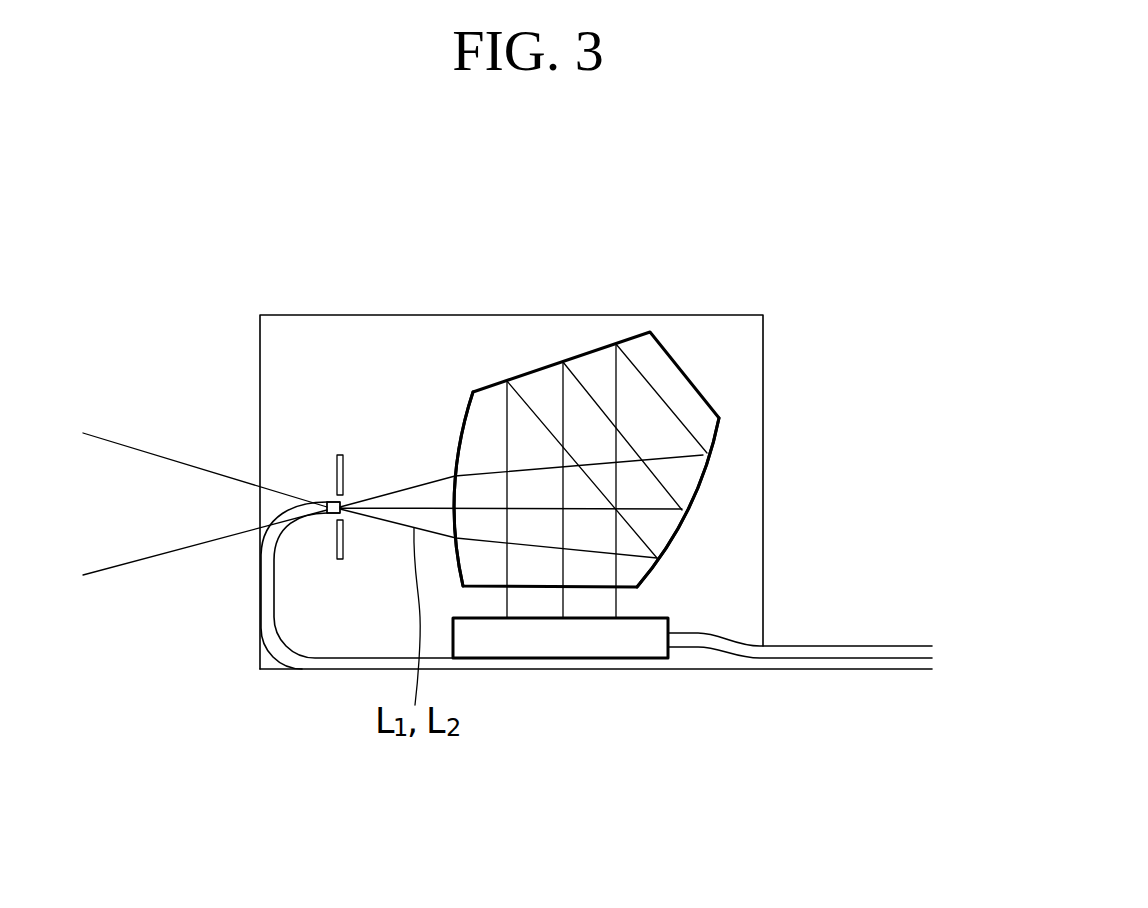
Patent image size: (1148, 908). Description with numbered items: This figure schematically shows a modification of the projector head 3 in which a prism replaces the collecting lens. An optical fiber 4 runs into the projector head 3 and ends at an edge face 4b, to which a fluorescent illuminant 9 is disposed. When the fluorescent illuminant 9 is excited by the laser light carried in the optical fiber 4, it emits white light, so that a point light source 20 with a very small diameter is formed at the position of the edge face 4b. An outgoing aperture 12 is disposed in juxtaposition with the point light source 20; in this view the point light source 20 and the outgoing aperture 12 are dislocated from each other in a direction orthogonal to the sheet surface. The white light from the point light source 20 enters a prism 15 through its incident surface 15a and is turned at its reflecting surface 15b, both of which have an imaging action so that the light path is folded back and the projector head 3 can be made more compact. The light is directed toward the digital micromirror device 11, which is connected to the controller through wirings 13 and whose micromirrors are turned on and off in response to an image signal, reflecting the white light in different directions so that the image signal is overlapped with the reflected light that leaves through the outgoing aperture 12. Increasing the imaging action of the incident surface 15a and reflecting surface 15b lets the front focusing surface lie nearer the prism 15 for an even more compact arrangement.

The projector head 3 is at (700, 266).
The optical fiber 4 is at (517, 669).
The edge face 4b is at (327, 511).
The fluorescent illuminant 9 is at (340, 513).
The digital micromirror device 11 is at (605, 643).
The outgoing aperture 12 is at (337, 472).
The wirings 13 is at (715, 638).
The prism 15 is at (700, 390).
The incident surface 15a is at (464, 420).
The reflecting surface 15b is at (700, 486).
The point light source 20 is at (368, 476).